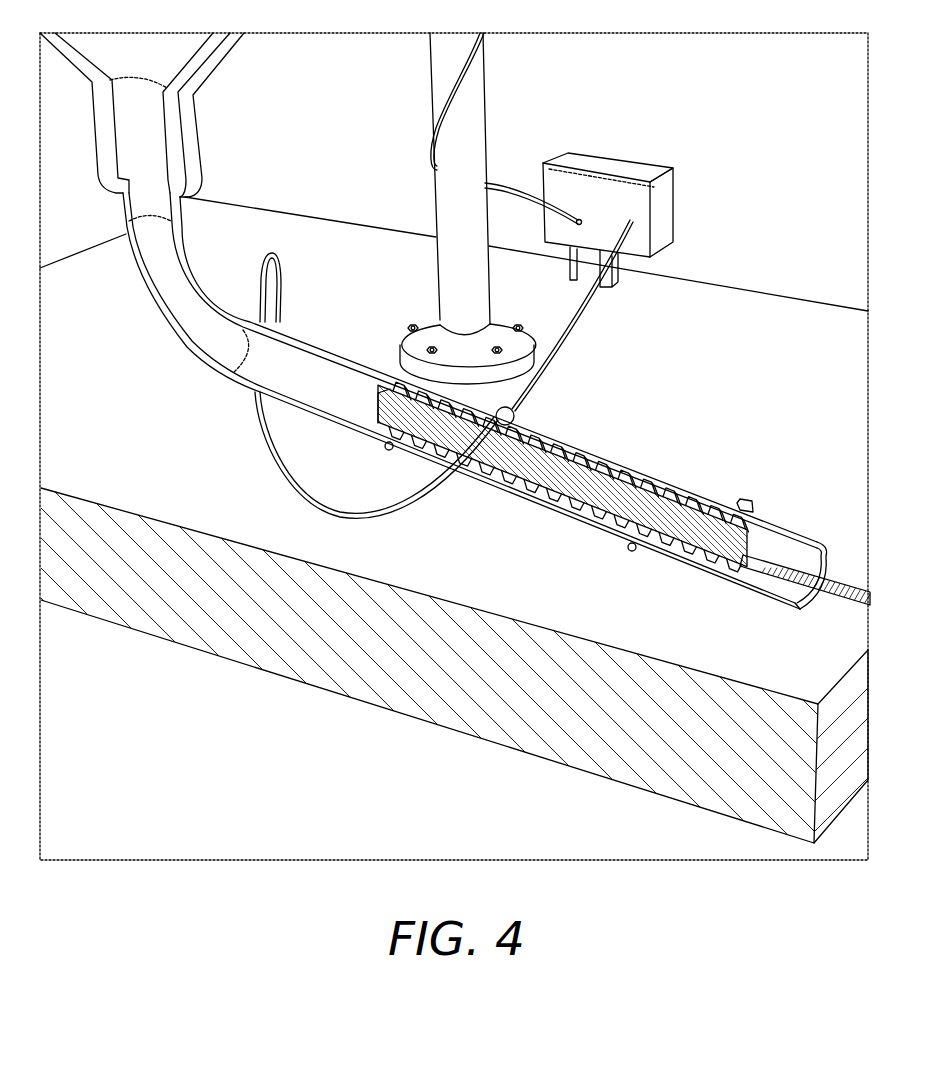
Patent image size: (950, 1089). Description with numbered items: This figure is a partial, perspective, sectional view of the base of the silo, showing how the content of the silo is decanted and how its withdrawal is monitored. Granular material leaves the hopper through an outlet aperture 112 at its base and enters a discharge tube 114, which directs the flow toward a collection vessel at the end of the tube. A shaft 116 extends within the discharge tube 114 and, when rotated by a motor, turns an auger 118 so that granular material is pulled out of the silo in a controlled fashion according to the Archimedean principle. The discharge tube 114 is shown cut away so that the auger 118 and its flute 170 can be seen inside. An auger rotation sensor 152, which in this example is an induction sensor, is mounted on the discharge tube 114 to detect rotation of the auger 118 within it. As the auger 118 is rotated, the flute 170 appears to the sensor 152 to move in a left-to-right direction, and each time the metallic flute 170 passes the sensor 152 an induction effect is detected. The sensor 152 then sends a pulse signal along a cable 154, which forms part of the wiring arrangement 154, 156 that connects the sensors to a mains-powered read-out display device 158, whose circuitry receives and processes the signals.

The outlet aperture 112 is at (140, 99).
The discharge tube 114 is at (324, 346).
The shaft 116 is at (858, 598).
The auger 118 is at (545, 473).
The auger rotation sensor 152 is at (748, 500).
The cable 154 is at (570, 324).
The wiring arrangement 156 is at (512, 186).
The read-out display device 158 is at (638, 152).
The flute 170 is at (664, 493).